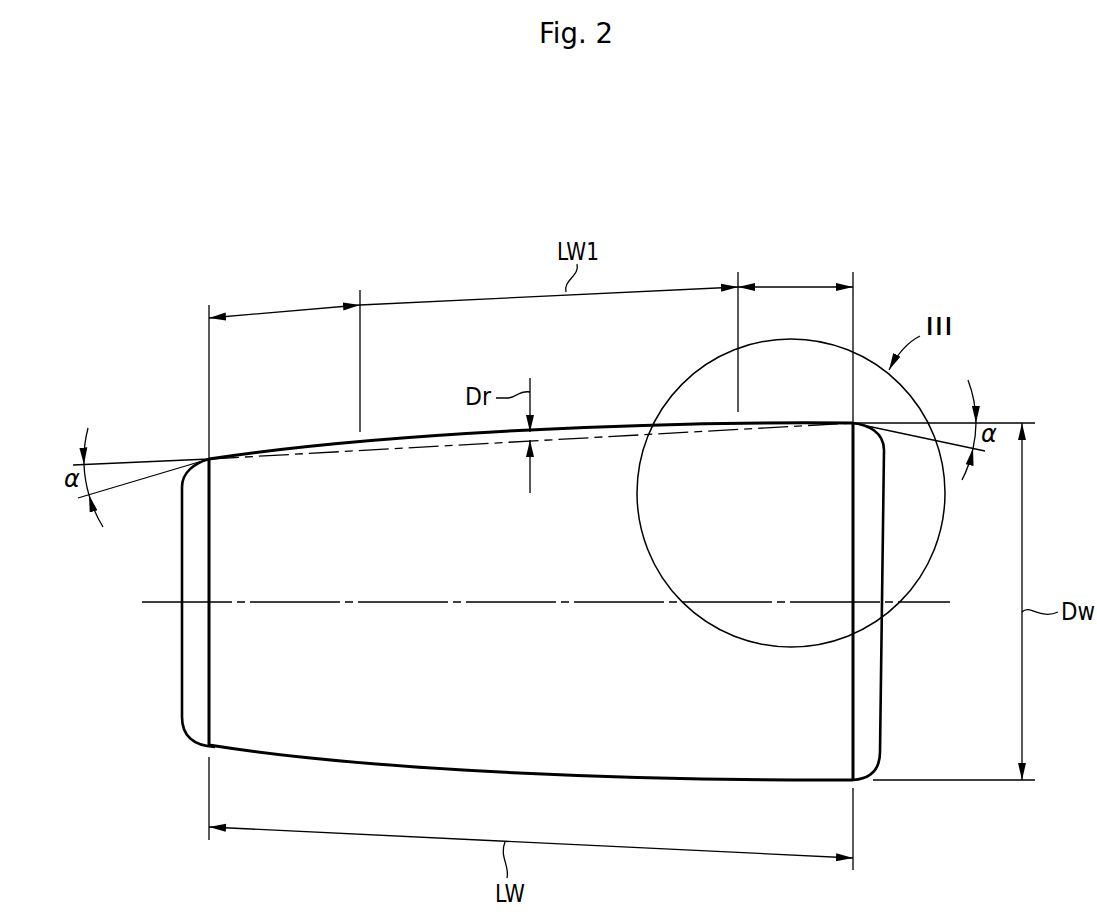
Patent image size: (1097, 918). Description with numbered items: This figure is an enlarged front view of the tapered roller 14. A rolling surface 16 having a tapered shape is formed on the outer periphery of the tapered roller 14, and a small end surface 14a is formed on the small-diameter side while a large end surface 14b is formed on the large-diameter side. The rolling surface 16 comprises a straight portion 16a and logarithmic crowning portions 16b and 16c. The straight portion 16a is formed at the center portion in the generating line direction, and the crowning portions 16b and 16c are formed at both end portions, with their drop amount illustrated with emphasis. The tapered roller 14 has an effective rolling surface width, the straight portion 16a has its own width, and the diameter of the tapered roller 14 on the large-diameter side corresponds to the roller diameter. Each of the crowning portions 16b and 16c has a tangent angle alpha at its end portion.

The tapered roller 14 is at (442, 708).
The small end surface 14a is at (182, 645).
The large end surface 14b is at (886, 658).
The rolling surface 16 is at (586, 427).
The straight portion 16a is at (495, 297).
The crowning portion 16b is at (790, 284).
The crowning portion 16c is at (284, 310).